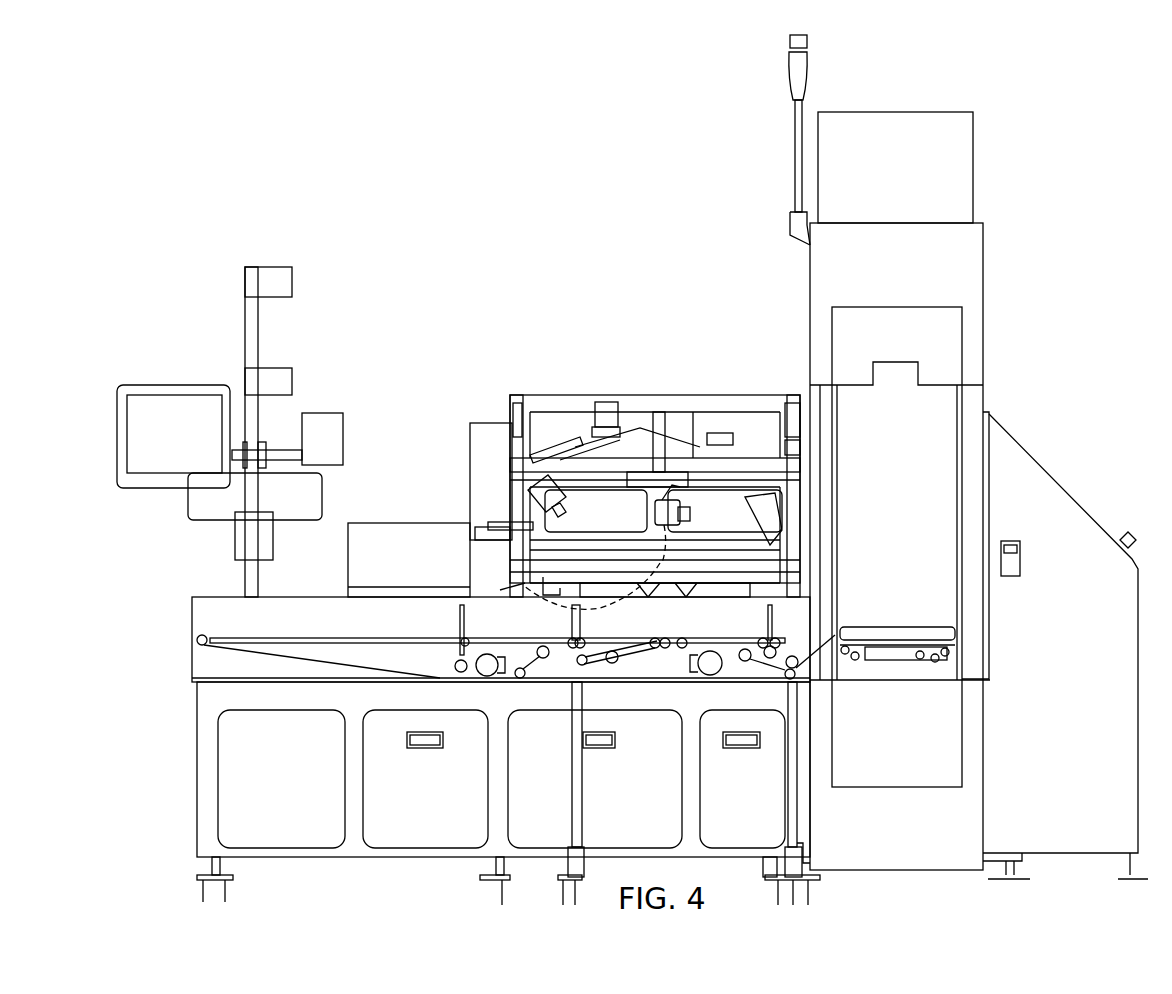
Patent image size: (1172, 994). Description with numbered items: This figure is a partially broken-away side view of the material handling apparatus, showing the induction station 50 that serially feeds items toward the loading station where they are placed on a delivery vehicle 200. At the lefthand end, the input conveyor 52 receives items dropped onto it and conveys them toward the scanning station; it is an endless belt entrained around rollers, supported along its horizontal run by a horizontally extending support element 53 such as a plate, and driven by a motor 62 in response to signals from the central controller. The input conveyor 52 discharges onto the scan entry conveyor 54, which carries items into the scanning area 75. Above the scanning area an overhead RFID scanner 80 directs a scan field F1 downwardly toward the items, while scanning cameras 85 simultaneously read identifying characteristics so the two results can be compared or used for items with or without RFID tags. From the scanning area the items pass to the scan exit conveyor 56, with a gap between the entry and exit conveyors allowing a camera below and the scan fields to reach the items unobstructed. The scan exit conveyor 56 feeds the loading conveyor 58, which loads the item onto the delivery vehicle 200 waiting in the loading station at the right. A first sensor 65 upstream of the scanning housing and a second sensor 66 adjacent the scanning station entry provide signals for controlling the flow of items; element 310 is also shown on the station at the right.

The induction station 50 is at (178, 625).
The input conveyor 52 is at (327, 637).
The horizontally extending support element 53 is at (505, 640).
The scan entry conveyor 54 is at (615, 640).
The scan exit conveyor 56 is at (730, 645).
The loading conveyor 58 is at (798, 640).
The motor 62 is at (487, 676).
The first sensor 65 is at (457, 623).
The second sensor 66 is at (570, 625).
The scanning area 75 is at (683, 622).
The RFID scanner 80 is at (563, 445).
The scanning cameras 85 is at (565, 482).
The delivery vehicle 200 is at (898, 618).
The tower unit 310 is at (928, 455).
The scan field F1 is at (510, 497).